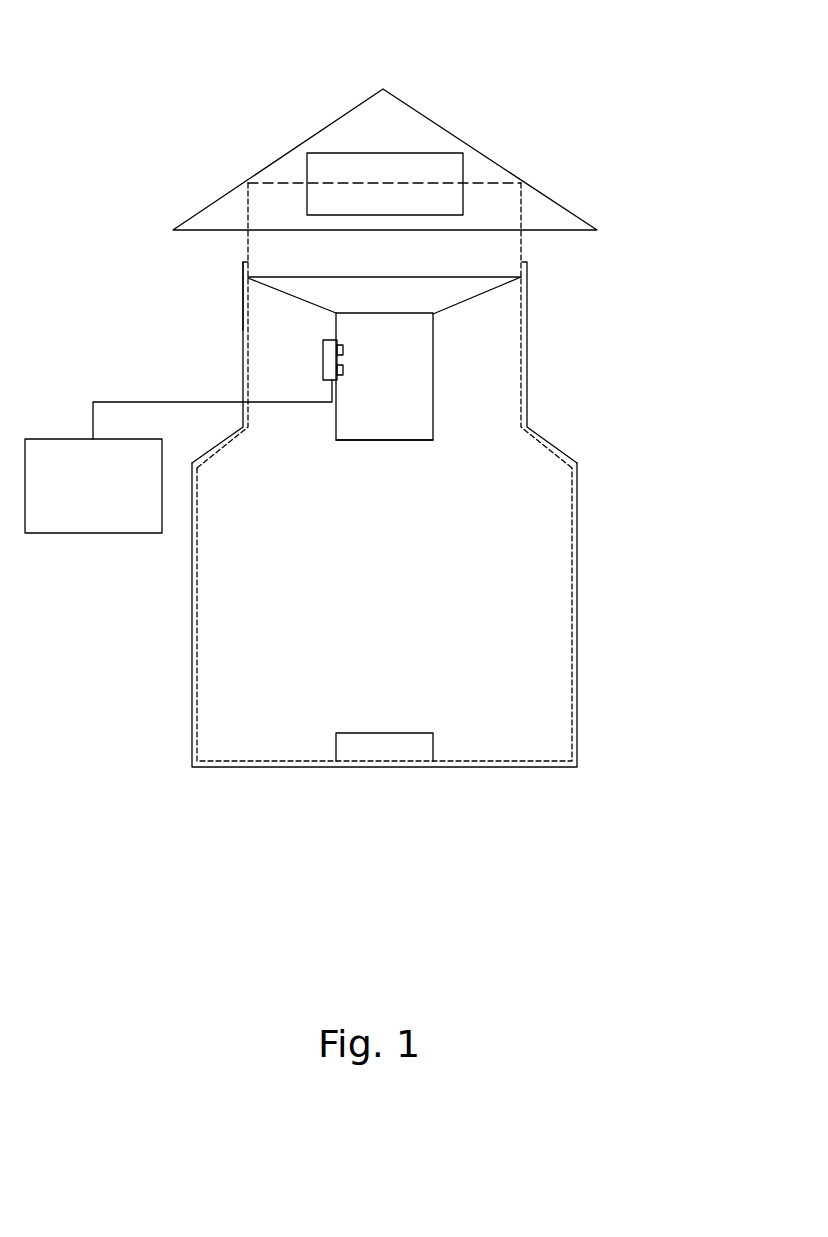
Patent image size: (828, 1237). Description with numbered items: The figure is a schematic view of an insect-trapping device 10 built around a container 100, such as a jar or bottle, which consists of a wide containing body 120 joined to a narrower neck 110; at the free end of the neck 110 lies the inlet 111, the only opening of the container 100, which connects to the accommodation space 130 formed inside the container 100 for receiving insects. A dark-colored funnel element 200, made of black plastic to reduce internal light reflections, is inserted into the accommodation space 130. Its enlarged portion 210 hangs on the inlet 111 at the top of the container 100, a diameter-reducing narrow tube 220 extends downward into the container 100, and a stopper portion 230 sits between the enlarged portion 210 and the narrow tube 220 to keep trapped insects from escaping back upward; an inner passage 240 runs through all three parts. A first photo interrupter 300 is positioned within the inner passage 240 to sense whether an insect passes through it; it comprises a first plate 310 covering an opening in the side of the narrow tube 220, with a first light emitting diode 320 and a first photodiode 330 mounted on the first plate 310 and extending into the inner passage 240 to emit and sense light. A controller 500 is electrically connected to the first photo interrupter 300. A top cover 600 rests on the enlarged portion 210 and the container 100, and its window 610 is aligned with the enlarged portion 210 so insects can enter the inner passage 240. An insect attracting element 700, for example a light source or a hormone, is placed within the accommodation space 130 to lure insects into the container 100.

The insect-trapping device 10 is at (78, 33).
The container 100 is at (413, 475).
The neck 110 is at (527, 407).
The inlet 111 is at (243, 262).
The containing body 120 is at (577, 533).
The accommodation space 130 is at (540, 592).
The funnel element 200 is at (479, 359).
The enlarged portion 210 is at (510, 247).
The narrow tube 220 is at (410, 352).
The stopper portion 230 is at (410, 312).
The inner passage 240 is at (411, 450).
The first photo interrupter 300 is at (212, 320).
The first plate 310 is at (323, 354).
The first light emitting diode 320 is at (323, 347).
The first photodiode 330 is at (323, 370).
The controller 500 is at (92, 533).
The top cover 600 is at (405, 128).
The window 610 is at (458, 158).
The insect attracting element 700 is at (412, 743).